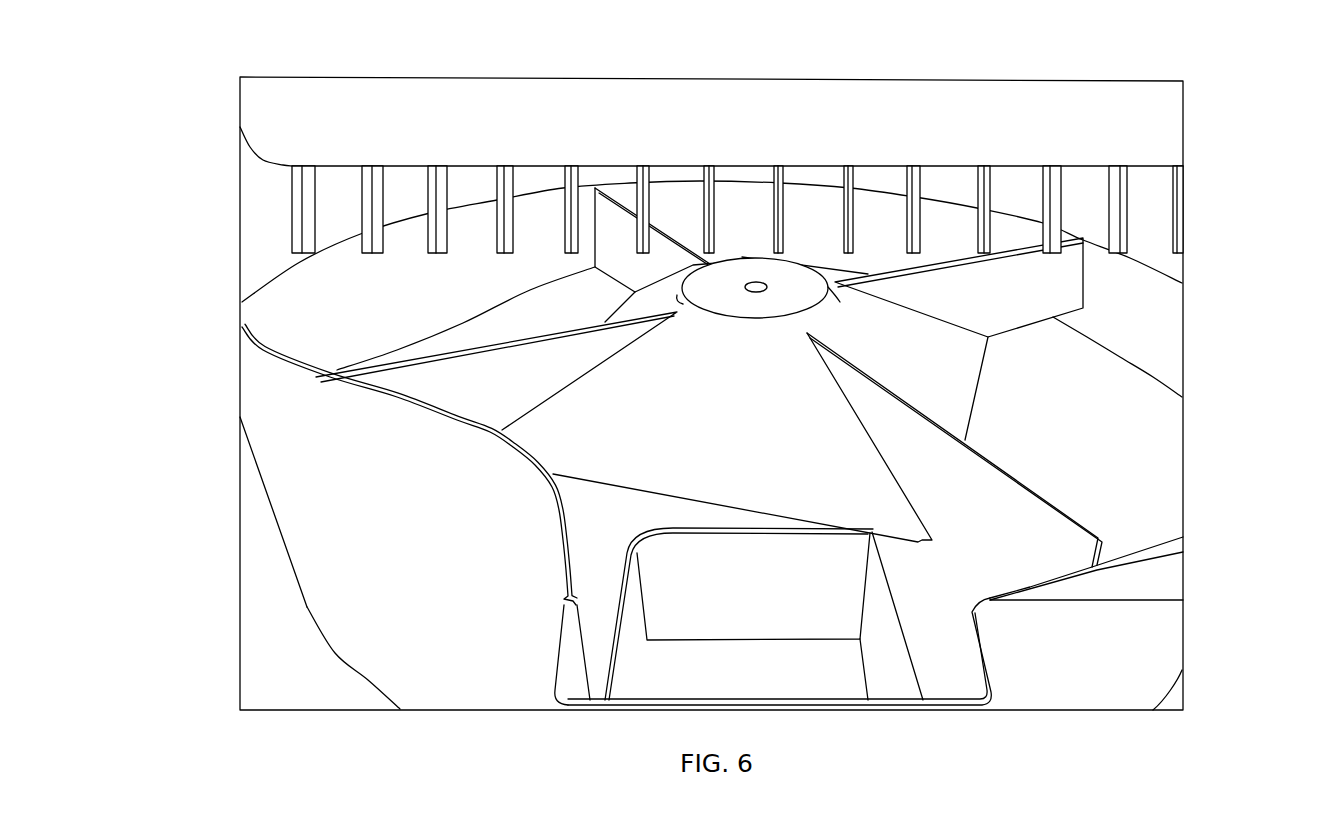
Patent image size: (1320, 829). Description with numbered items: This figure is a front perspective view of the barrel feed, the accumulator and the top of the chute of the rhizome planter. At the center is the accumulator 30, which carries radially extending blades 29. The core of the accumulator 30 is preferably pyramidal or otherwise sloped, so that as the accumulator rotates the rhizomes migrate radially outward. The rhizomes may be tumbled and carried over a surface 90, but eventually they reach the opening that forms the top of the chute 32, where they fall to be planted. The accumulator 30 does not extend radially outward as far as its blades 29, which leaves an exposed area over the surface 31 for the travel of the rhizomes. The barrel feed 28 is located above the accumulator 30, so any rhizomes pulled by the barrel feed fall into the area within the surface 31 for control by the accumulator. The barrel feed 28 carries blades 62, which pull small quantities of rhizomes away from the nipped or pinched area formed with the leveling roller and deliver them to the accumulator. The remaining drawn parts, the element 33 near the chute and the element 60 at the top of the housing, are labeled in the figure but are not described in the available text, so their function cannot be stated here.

The barrel feed 28 is at (1155, 127).
The radially extending blades 29 is at (1073, 513).
The accumulator 30 is at (728, 431).
The surface 31 is at (575, 542).
The chute 32 is at (628, 668).
The duct flange 33 is at (612, 626).
The top panel 60 is at (1033, 95).
The blades 62 is at (1123, 212).
The surface 90 is at (1107, 438).